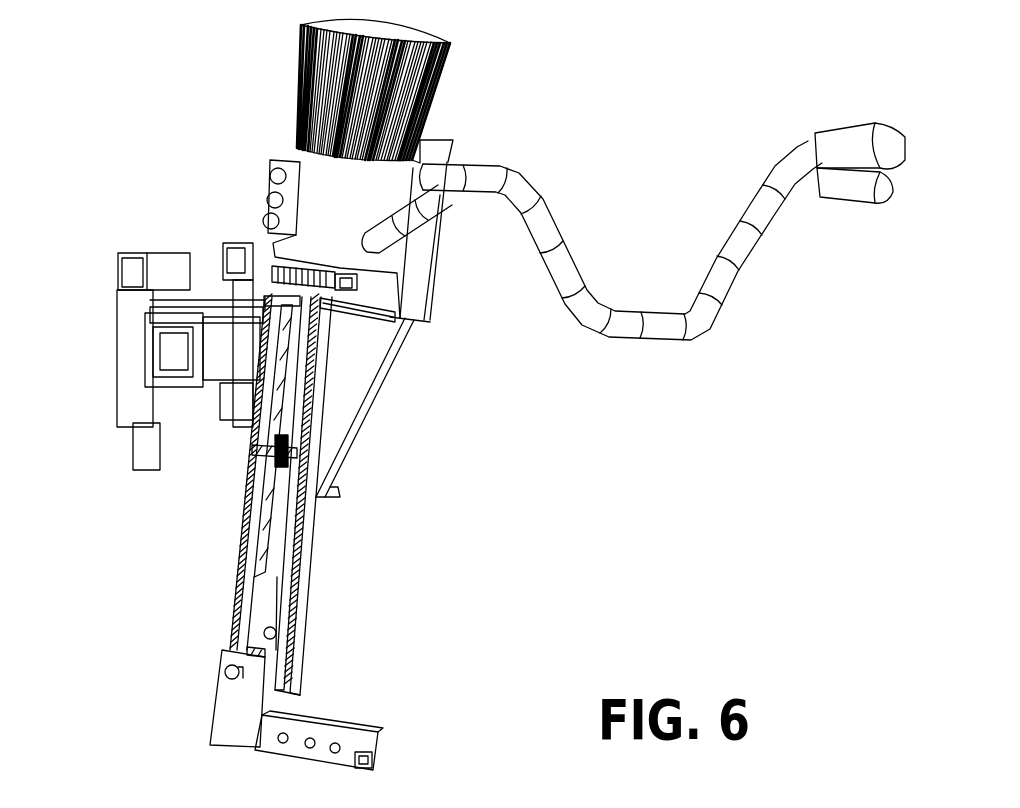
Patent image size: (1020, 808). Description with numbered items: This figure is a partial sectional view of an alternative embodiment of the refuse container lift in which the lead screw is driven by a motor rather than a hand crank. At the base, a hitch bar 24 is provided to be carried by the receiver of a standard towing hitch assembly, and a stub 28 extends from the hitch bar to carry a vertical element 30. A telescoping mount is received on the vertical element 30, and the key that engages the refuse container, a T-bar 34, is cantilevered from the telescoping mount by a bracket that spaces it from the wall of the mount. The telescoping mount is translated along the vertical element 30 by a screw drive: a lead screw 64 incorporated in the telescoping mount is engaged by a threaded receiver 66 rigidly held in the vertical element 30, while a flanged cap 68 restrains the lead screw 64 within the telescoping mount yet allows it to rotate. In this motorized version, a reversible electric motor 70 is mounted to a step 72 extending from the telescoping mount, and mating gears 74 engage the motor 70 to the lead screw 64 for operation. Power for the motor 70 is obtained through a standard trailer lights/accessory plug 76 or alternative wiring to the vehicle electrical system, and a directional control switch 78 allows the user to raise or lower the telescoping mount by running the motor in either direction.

The hitch bar 24 is at (302, 723).
The stub 28 is at (232, 718).
The vertical element 30 is at (302, 585).
The T-bar 34 is at (137, 345).
The lead screw 64 is at (268, 502).
The threaded receiver 66 is at (316, 497).
The flanged cap 68 is at (297, 332).
The reversible electric motor 70 is at (347, 192).
The step 72 is at (345, 385).
The mating gears 74 is at (310, 275).
The trailer lights/accessory plug 76 is at (838, 148).
The directional control switch 78 is at (266, 188).